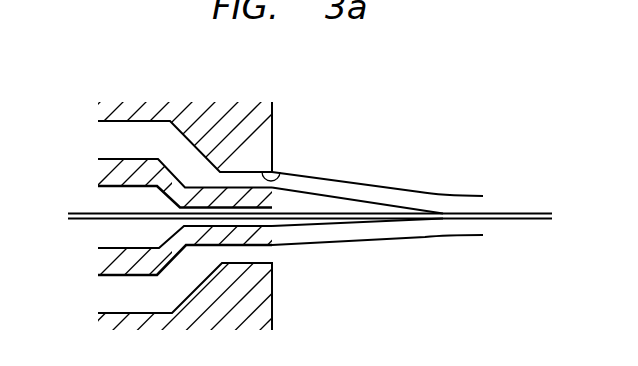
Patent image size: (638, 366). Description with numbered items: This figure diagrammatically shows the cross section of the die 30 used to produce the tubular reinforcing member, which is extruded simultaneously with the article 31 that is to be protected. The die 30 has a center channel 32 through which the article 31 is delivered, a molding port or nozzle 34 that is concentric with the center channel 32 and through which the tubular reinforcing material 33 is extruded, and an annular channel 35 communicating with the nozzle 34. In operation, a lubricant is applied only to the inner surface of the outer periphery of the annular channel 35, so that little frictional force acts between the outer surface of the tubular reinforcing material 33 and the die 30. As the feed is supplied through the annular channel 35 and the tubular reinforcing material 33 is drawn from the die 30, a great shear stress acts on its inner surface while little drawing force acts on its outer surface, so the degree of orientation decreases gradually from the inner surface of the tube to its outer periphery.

The die 30 is at (254, 101).
The article 31 is at (512, 212).
The center channel 32 is at (272, 226).
The tubular reinforcing material 33 is at (419, 193).
The molding port (nozzle) 34 is at (277, 172).
The annular channel 35 is at (110, 138).